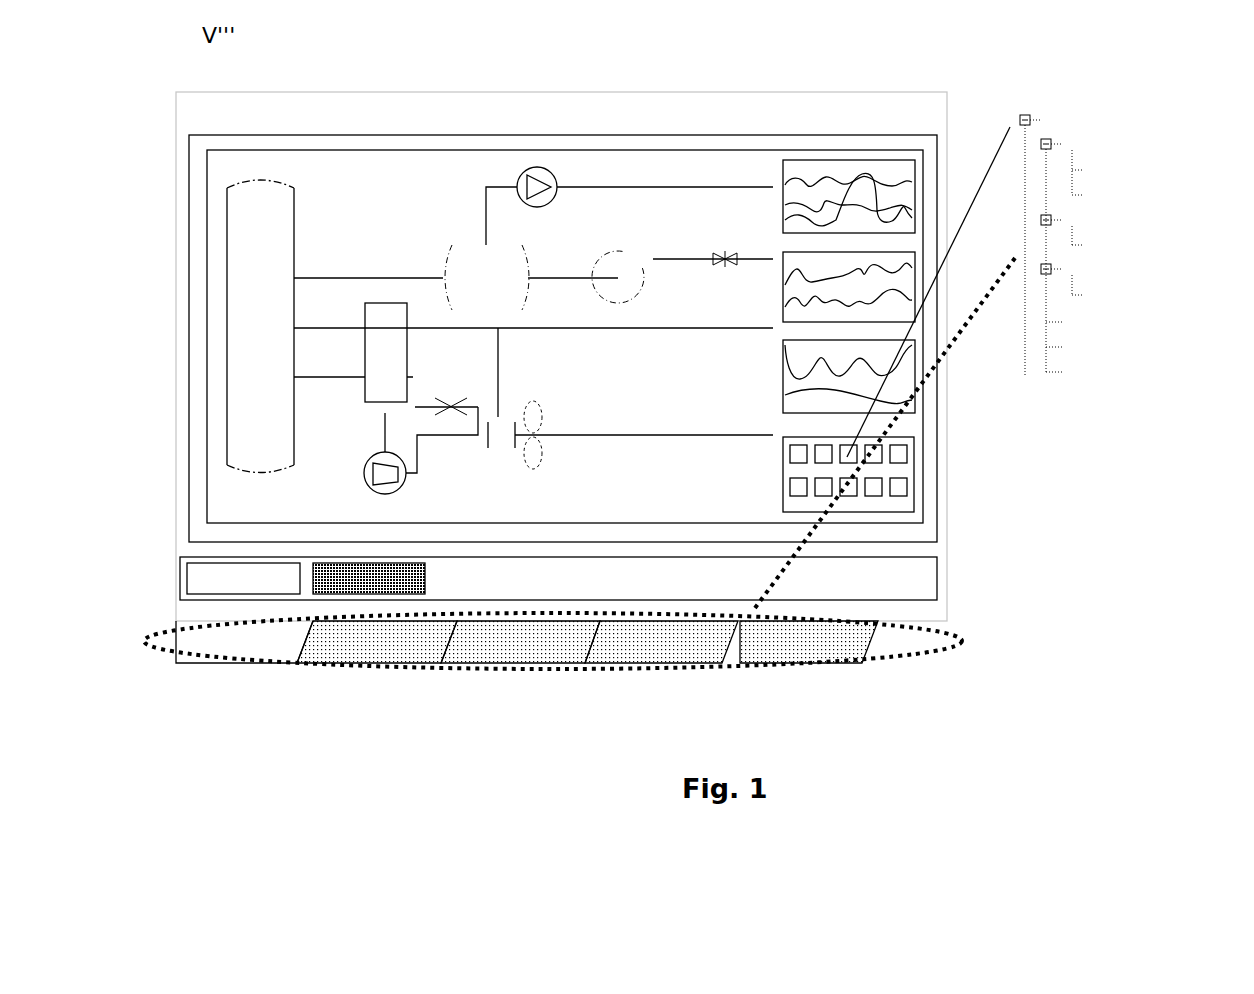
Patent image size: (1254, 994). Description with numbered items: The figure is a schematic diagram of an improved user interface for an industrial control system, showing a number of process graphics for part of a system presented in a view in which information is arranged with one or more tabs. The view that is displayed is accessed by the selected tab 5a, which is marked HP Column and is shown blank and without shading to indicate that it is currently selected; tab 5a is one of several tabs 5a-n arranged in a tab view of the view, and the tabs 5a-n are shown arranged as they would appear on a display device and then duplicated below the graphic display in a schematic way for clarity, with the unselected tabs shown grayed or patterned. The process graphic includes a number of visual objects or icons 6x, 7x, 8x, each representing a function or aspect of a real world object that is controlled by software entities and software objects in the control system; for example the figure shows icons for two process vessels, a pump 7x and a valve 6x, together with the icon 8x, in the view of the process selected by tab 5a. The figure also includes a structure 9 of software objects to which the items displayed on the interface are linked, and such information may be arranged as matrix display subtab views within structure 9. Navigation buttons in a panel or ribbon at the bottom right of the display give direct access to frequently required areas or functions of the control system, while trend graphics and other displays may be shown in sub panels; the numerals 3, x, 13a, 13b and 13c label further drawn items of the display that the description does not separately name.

The operator display / process screen 3 is at (890, 495).
The process object (column) x is at (263, 215).
The visual object or icon 8x is at (475, 270).
The pump 7x is at (622, 268).
The valve 6x is at (453, 412).
The trend display window 13a is at (875, 165).
The trend display window 13b is at (888, 307).
The trend display window 13c is at (895, 380).
The tab 5a is at (252, 665).
The tabs 5a-n is at (556, 563).
The structure of software objects 9 is at (1018, 110).